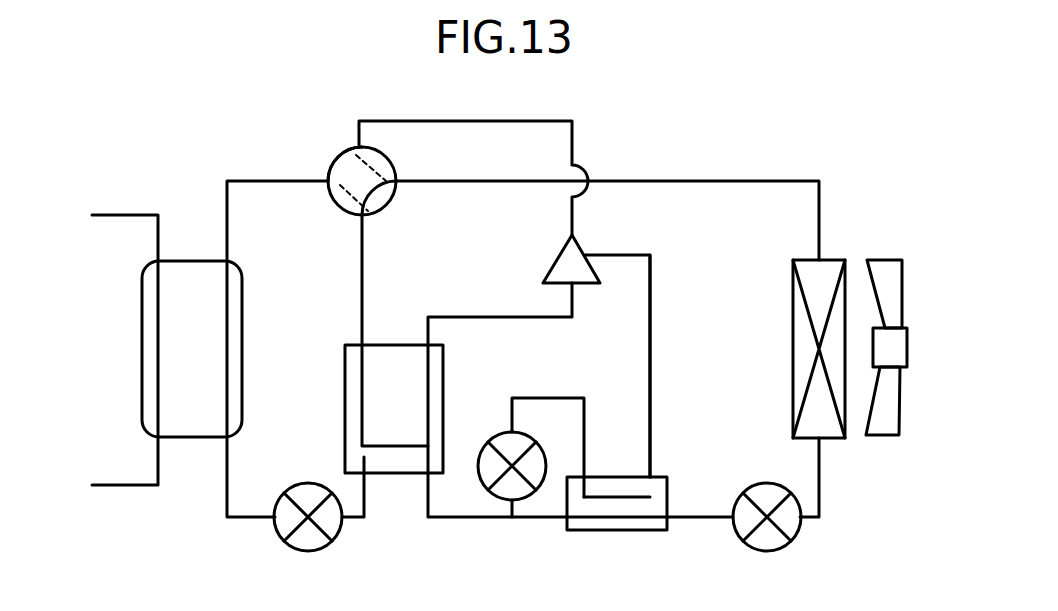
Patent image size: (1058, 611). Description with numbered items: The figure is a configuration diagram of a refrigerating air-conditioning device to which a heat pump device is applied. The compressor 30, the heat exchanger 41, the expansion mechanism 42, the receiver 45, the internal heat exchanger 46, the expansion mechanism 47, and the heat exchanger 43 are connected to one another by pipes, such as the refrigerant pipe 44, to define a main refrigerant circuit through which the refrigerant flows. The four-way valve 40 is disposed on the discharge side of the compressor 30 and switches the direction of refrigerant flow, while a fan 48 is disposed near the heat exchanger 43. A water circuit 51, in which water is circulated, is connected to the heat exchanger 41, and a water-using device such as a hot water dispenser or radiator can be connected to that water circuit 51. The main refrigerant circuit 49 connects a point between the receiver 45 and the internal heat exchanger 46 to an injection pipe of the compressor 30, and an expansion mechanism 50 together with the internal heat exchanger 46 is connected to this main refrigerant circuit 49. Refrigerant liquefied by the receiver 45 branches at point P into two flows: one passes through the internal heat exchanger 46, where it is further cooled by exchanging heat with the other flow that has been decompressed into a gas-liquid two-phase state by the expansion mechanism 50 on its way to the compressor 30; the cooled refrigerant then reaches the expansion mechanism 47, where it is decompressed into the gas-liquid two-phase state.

The compressor 30 is at (548, 262).
The four-way valve 40 is at (331, 164).
The heat exchanger 41 is at (242, 290).
The expansion mechanism 42 is at (307, 552).
The heat exchanger 43 is at (833, 258).
The refrigerant pipe 44 is at (716, 179).
The receiver 45 is at (345, 395).
The internal heat exchanger 46 is at (600, 531).
The expansion mechanism 47 is at (738, 538).
The fan 48 is at (883, 438).
The main refrigerant circuit 49 is at (652, 378).
The expansion mechanism 50 is at (496, 431).
The water circuit 51 is at (133, 214).